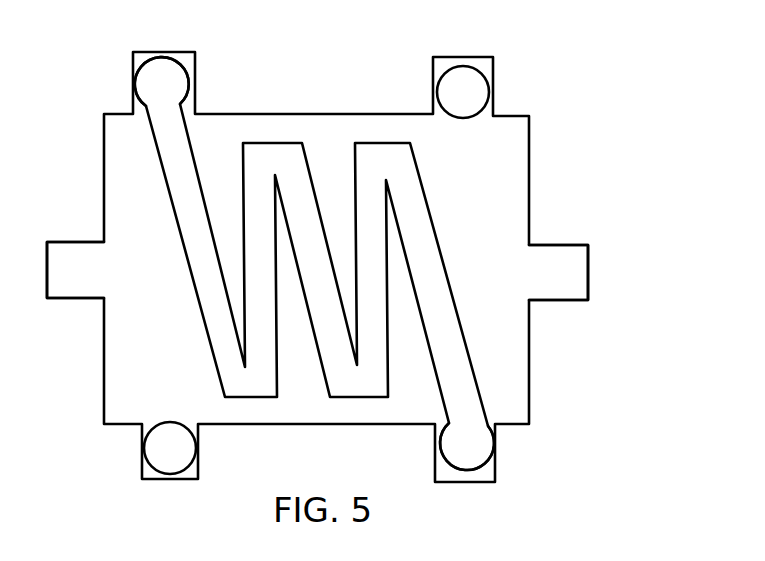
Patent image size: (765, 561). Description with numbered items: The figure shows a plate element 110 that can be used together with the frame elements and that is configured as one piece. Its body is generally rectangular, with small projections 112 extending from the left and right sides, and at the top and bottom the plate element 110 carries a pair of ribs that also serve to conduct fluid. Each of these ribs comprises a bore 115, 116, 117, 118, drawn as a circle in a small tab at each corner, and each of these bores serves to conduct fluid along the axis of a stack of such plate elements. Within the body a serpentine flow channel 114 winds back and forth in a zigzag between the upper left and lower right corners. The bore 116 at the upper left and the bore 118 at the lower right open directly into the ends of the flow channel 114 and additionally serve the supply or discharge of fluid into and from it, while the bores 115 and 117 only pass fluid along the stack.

The plate element 110 is at (546, 166).
The ribs 112 is at (72, 258).
The flow channel 114 is at (197, 238).
The bore 115 is at (470, 93).
The bore 116 is at (172, 90).
The bore 117 is at (175, 445).
The bore 118 is at (473, 448).